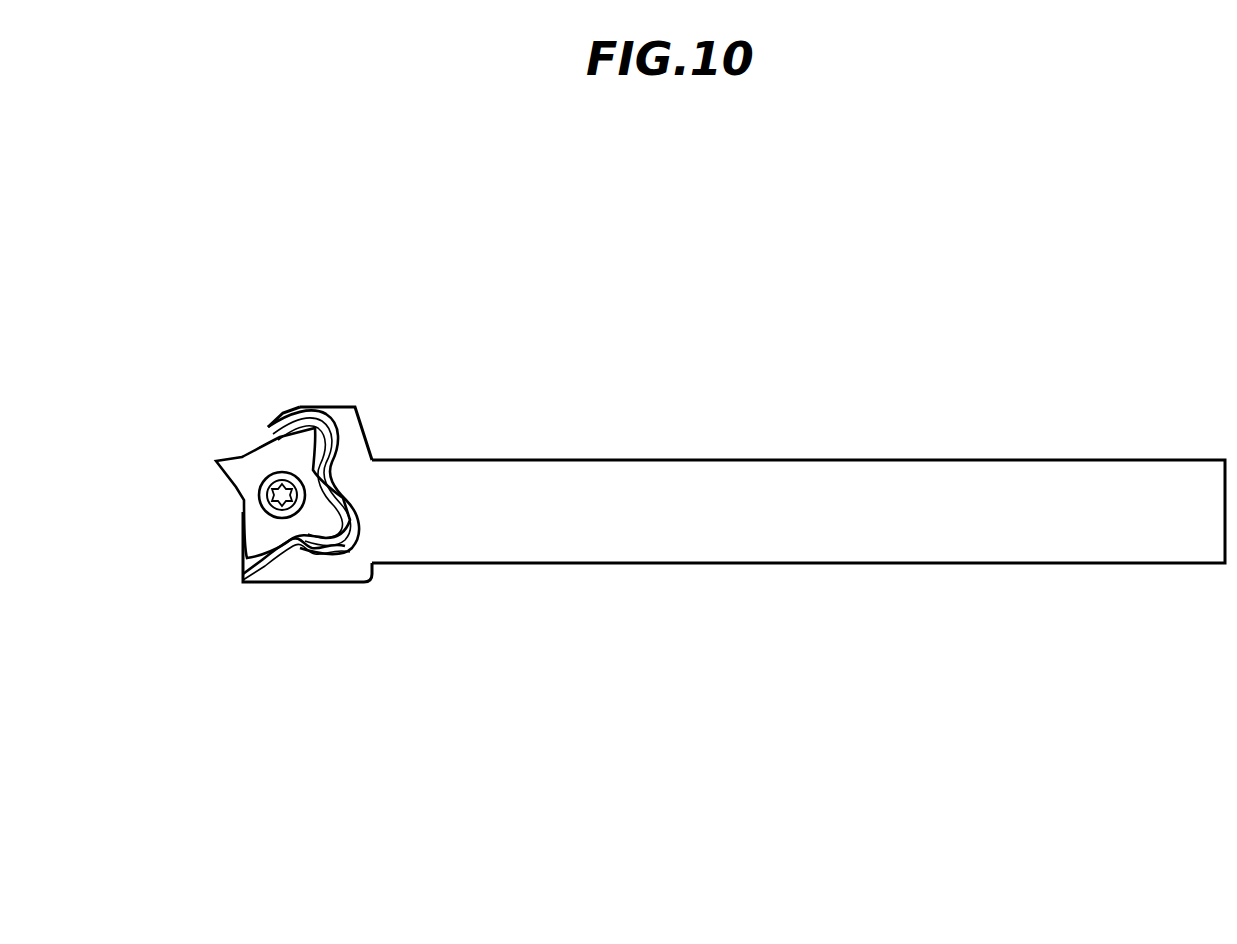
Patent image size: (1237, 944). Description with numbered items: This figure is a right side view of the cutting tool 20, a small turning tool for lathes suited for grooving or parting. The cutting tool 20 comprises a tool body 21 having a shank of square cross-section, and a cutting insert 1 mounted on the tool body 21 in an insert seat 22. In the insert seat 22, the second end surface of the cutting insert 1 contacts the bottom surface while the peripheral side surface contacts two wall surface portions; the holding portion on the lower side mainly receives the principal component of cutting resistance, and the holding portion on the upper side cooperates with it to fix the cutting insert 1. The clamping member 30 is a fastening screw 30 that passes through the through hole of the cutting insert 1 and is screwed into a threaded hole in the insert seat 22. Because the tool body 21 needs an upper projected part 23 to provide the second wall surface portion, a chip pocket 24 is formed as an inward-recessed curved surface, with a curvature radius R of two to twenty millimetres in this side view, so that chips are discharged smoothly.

The cutting insert 1 is at (236, 498).
The cutting tool 20 is at (767, 456).
The tool body 21 is at (352, 460).
The insert seat 22 is at (268, 567).
The upper projected part 23 is at (338, 405).
The chip pocket 24 is at (258, 449).
The clamping member (fastening screw) 30 is at (298, 512).